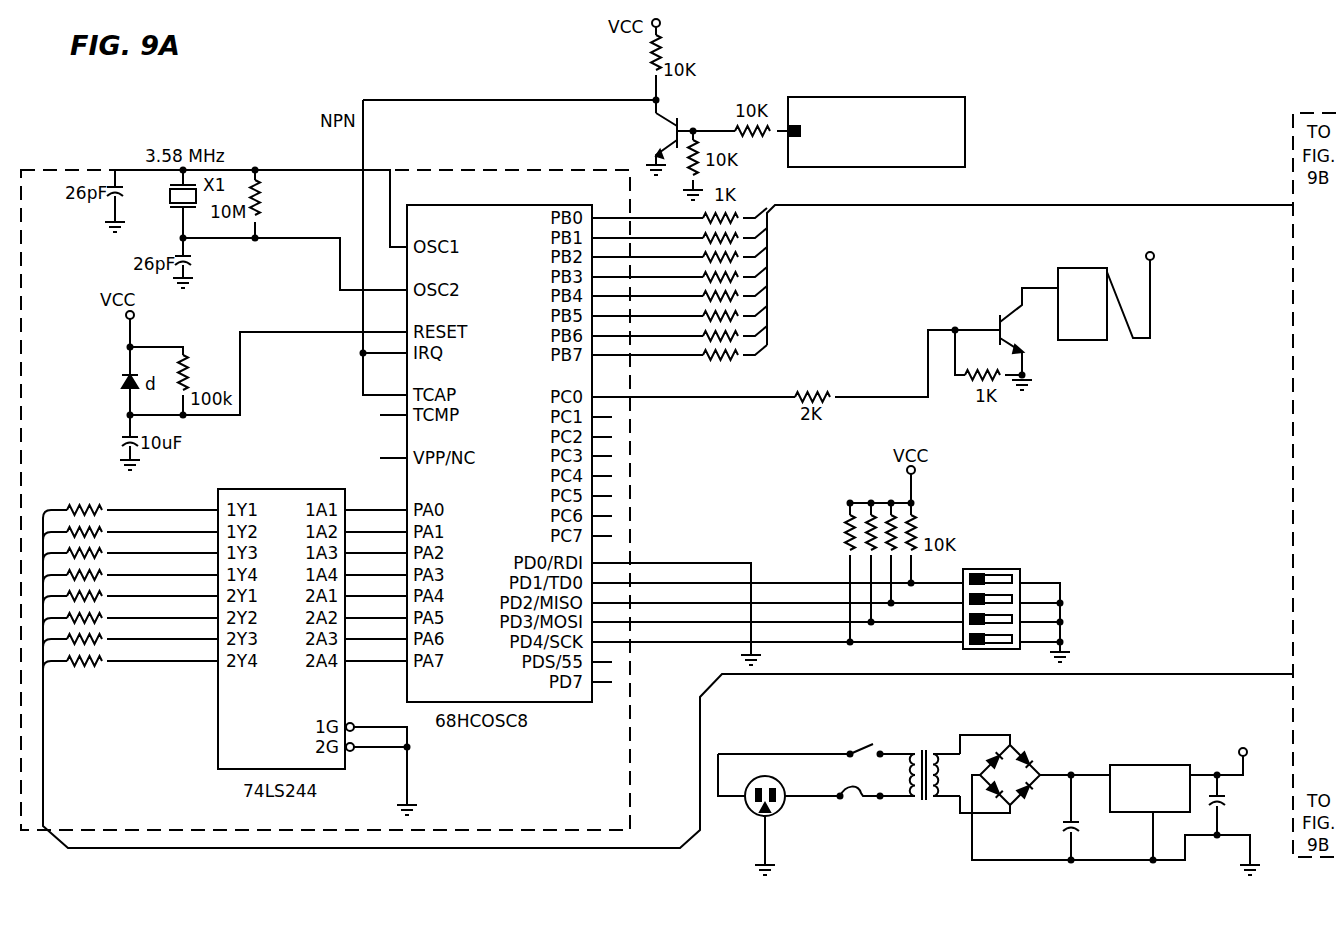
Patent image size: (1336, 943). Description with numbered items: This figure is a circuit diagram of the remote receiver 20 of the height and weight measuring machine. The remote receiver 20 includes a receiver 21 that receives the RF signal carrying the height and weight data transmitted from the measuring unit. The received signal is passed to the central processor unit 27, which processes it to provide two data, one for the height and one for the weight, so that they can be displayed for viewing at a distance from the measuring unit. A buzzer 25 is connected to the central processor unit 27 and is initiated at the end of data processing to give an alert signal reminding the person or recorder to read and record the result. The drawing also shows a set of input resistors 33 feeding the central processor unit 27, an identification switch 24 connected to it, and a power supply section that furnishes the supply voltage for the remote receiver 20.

The remote receiver 20 is at (1006, 675).
The receiver 21 is at (897, 168).
The ID number switch 24 is at (1020, 567).
The buzzer 25 is at (1068, 291).
The central processor unit 27 is at (630, 760).
The input resistors 33 is at (84, 573).